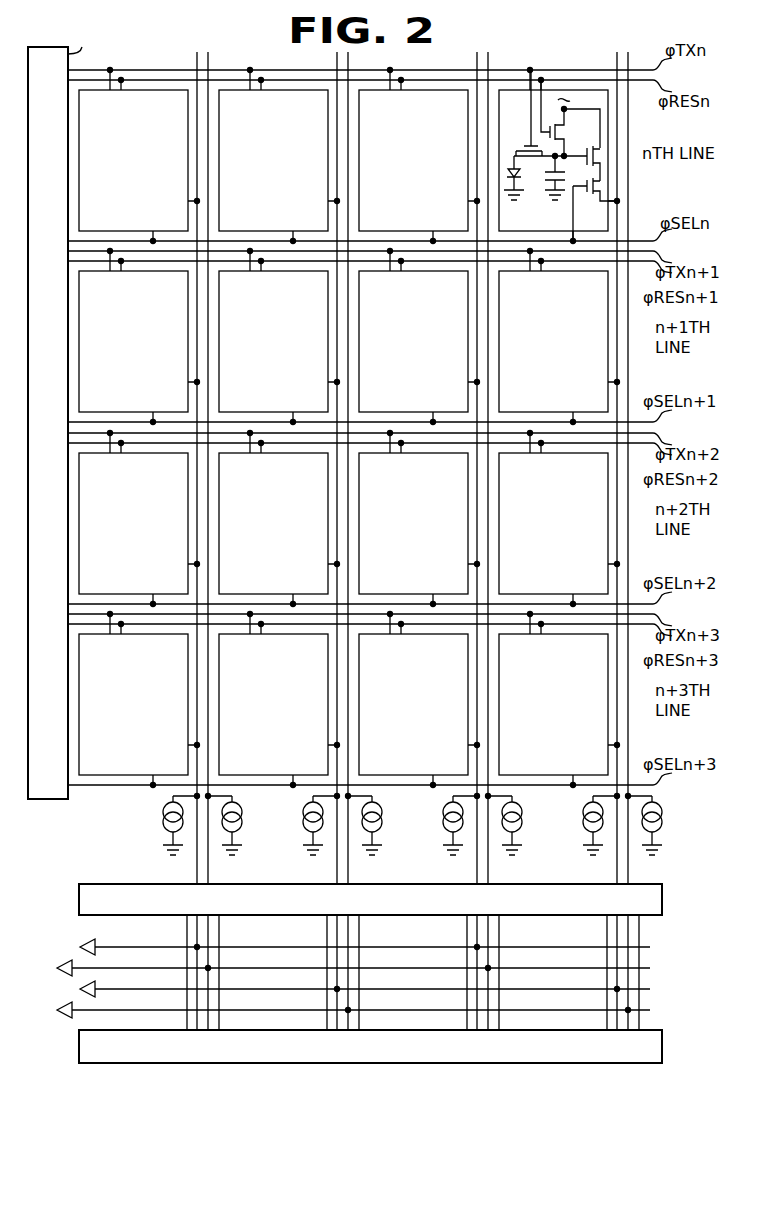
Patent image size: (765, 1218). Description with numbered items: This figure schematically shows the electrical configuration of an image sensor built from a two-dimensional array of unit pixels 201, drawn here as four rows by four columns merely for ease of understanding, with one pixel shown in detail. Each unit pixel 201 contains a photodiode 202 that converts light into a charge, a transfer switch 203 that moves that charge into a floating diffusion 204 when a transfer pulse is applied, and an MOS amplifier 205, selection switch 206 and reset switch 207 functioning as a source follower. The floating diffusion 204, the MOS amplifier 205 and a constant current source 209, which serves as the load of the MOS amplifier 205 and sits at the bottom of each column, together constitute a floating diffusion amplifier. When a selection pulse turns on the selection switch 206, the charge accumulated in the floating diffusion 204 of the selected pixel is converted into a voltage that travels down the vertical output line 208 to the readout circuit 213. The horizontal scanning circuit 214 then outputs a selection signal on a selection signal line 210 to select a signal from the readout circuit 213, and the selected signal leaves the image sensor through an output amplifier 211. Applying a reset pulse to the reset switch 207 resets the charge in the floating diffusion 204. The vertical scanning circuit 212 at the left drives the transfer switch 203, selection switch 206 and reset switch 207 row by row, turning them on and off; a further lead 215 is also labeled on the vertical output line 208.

The unit pixel 201 is at (551, 90).
The photodiode 202 is at (520, 181).
The transfer switch 203 is at (524, 141).
The floating diffusion 204 is at (546, 182).
The MOS amplifier 205 is at (601, 157).
The selection switch 206 is at (601, 186).
The reset switch 207 is at (580, 137).
The vertical output line 208 is at (629, 376).
The constant current source 209 is at (163, 812).
The selection signal line 210 is at (639, 937).
The output amplifier 211 is at (74, 946).
The vertical scanning circuit 212 is at (131, 403).
The readout circuit 213 is at (662, 898).
The horizontal scanning circuit 214 is at (662, 1045).
The vertical output line to readout circuit 215 is at (629, 872).